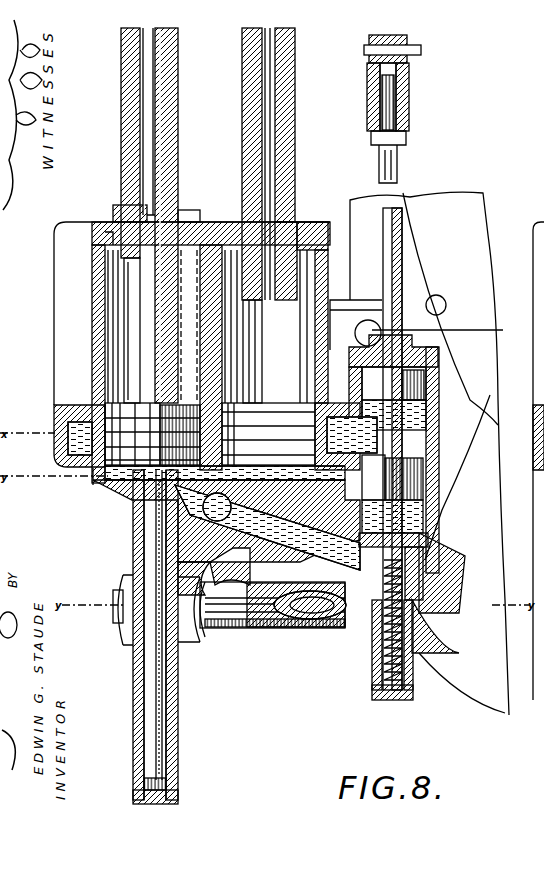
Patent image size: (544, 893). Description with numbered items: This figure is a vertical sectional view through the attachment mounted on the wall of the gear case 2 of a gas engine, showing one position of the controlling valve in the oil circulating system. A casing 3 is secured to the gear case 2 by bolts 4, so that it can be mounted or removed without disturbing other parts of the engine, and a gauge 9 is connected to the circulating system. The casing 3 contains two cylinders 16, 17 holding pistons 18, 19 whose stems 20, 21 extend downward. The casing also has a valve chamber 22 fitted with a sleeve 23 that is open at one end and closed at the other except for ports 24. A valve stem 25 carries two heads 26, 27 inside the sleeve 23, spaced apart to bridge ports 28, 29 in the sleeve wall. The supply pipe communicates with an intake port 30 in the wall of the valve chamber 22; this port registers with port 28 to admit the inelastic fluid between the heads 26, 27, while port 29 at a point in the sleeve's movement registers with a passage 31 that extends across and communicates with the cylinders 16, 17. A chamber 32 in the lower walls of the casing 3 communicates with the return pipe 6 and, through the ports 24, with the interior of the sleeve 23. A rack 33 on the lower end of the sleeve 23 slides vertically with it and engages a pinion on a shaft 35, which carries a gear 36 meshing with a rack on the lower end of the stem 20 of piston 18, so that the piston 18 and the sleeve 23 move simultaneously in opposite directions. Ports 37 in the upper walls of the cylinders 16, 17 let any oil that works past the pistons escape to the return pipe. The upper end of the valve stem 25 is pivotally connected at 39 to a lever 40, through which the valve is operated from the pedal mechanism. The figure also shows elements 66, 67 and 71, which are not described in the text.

The gear case 2 is at (476, 322).
The casing 3 is at (65, 263).
The bolts 4 is at (178, 516).
The return pipe 6 is at (188, 503).
The gauge 9 is at (445, 472).
The cylinder 16 is at (125, 290).
The cylinder 17 is at (238, 318).
The piston 18 is at (262, 410).
The piston 19 is at (198, 397).
The stem 20 is at (265, 362).
The stem 21 is at (150, 357).
The valve chamber 22 is at (430, 365).
The sleeve 23 is at (425, 395).
The ports 24 is at (440, 528).
The valve stem 25 is at (400, 172).
The head 26 is at (435, 380).
The head 27 is at (440, 495).
The port 28 is at (435, 405).
The port 29 is at (440, 425).
The intake port 30 is at (175, 490).
The passage 31 is at (57, 418).
The chamber 32 is at (210, 540).
The rack 33 is at (372, 633).
The shaft 35 is at (180, 650).
The gear 36 is at (445, 480).
The ports 37 is at (158, 236).
The pivotal connection 39 is at (405, 57).
The lever 40 is at (407, 68).
The tube 66 is at (255, 185).
The tube 67 is at (245, 70).
The port 71 is at (178, 196).